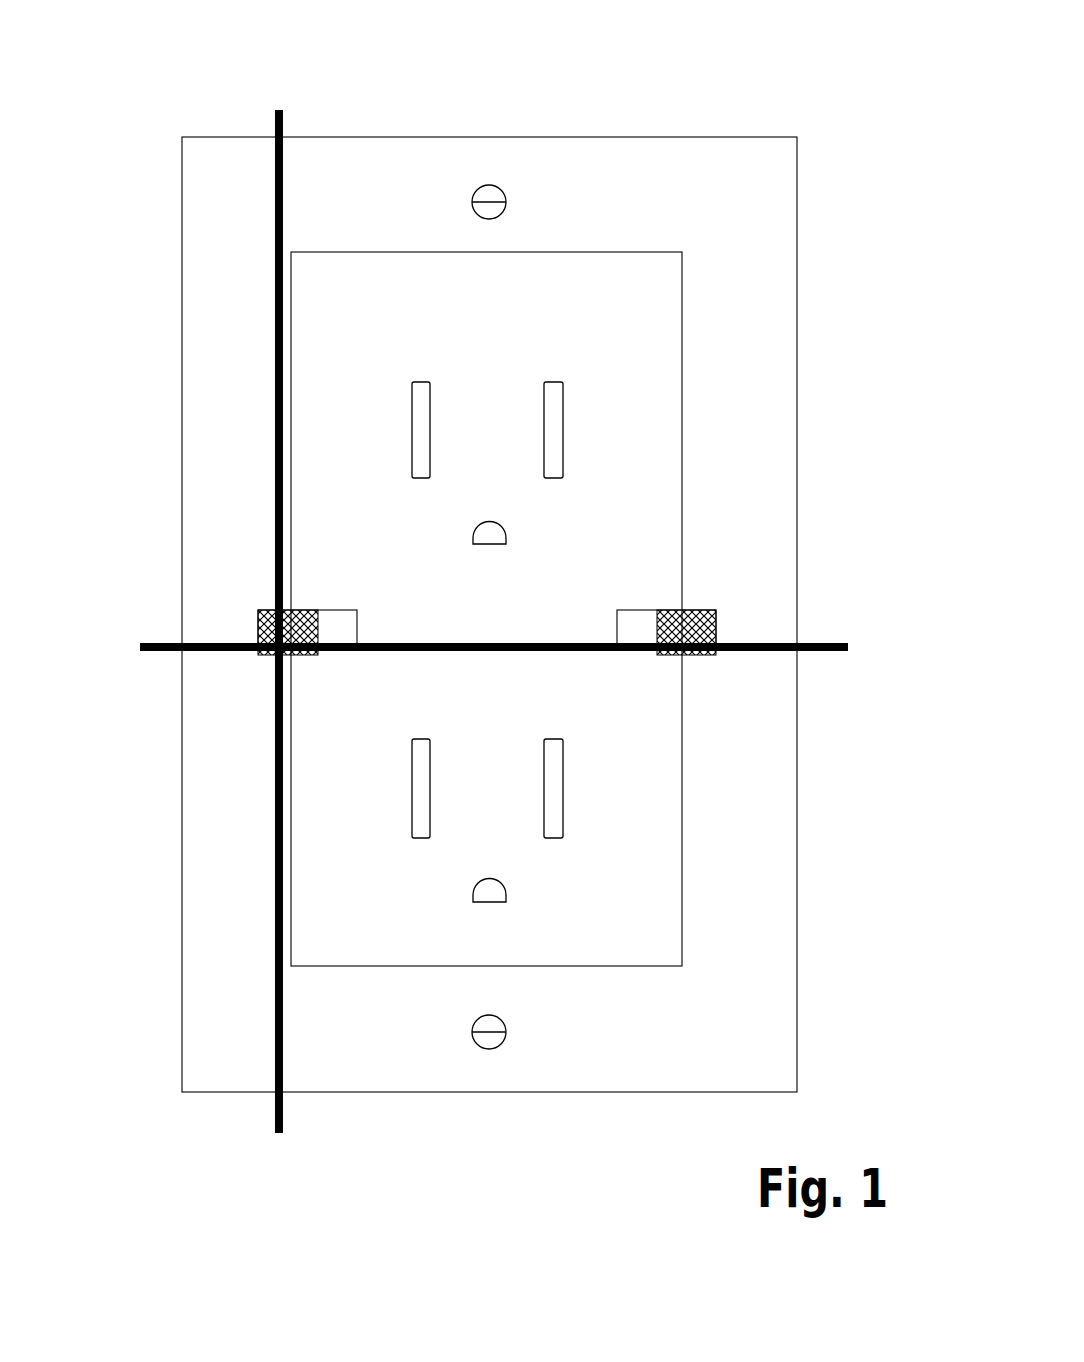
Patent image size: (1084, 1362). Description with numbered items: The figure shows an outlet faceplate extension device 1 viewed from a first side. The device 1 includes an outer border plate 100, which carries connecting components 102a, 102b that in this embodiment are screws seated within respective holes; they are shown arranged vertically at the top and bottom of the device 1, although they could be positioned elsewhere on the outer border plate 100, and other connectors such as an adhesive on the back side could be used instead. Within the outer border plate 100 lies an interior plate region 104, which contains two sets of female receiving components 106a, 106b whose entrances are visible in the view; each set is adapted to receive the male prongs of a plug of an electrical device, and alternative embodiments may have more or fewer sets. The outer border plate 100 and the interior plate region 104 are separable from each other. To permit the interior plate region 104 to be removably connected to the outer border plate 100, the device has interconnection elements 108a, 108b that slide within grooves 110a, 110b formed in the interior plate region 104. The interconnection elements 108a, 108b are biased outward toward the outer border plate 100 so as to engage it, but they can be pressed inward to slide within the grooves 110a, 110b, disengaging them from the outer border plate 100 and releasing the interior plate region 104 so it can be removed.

The outlet faceplate extension device 1 is at (630, 78).
The outer border plate 100 is at (200, 200).
The connecting component 102a is at (489, 185).
The connecting component 102b is at (489, 1050).
The interior plate region 104 is at (650, 320).
The set of female receiving components 106a is at (596, 428).
The set of female receiving components 106b is at (585, 850).
The interconnection element 108a is at (308, 610).
The interconnection element 108b is at (717, 620).
The groove 110a is at (340, 623).
The groove 110b is at (630, 655).